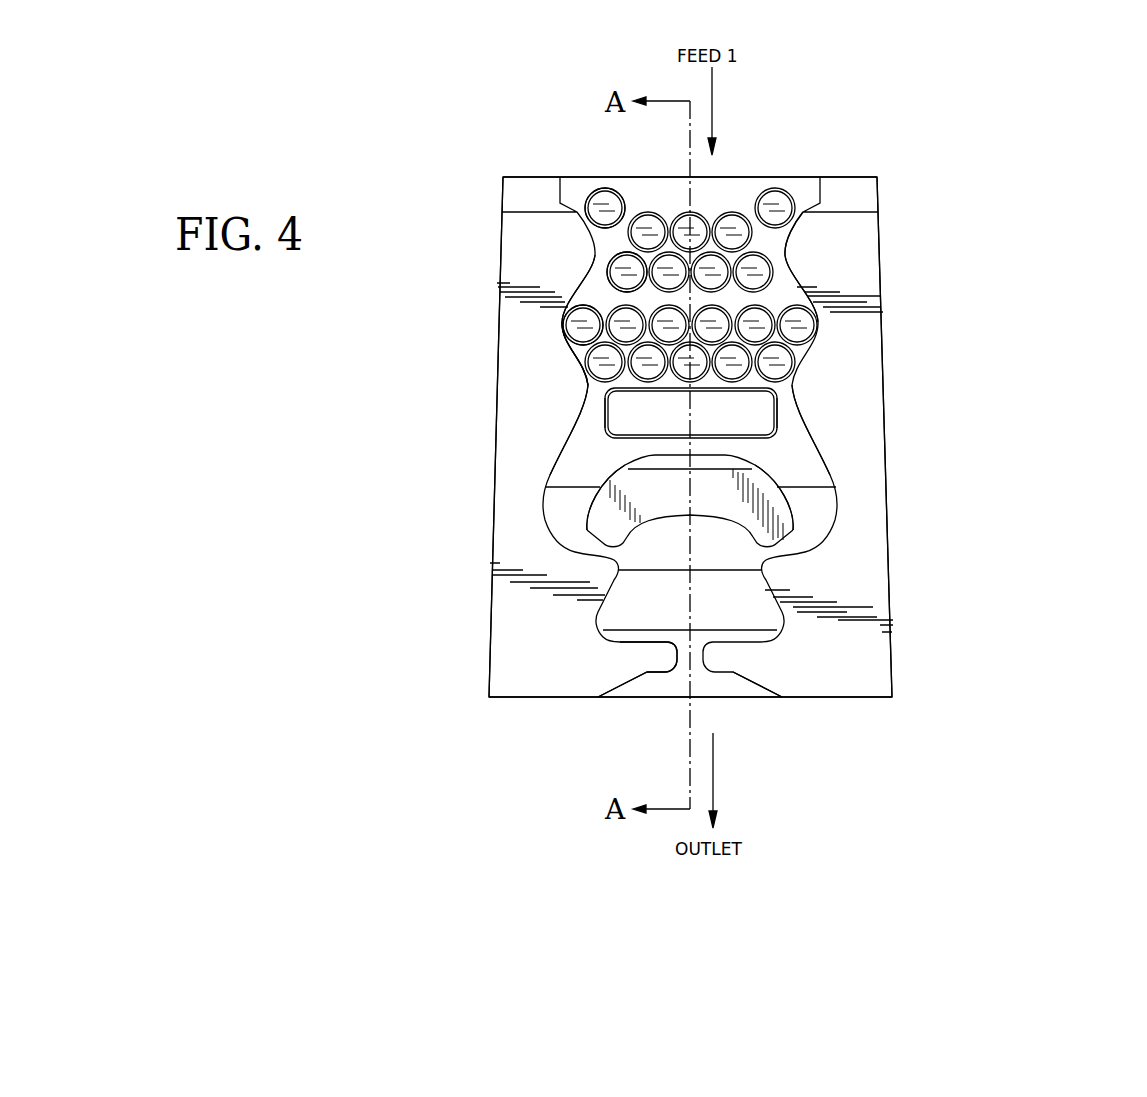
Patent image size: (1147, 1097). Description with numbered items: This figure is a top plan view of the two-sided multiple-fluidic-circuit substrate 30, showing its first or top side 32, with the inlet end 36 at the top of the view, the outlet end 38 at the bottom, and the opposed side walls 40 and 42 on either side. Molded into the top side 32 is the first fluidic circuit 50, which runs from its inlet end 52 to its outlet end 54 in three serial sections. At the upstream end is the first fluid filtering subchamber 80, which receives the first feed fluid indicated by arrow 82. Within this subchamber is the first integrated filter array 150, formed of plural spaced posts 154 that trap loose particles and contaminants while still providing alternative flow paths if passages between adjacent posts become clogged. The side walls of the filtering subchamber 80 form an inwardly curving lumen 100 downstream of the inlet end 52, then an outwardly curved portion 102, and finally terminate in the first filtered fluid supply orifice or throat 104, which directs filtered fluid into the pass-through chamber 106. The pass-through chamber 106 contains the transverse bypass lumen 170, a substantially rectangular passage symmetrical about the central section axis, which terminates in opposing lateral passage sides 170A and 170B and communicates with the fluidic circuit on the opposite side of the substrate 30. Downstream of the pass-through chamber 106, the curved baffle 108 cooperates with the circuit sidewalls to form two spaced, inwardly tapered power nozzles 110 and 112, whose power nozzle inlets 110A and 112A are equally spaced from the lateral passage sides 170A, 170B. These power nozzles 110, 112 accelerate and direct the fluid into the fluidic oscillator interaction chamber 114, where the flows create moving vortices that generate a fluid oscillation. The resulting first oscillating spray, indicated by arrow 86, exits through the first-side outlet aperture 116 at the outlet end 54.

The two-sided multiple-fluidic-circuit substrate 30 is at (948, 318).
The first or top side 32 is at (875, 360).
The inlet end 36 is at (802, 177).
The outlet end 38 is at (855, 697).
The side wall 40 is at (496, 298).
The side wall 42 is at (892, 488).
The first fluidic circuit 50 is at (545, 458).
The inlet end 52 is at (748, 187).
The outlet end 54 is at (748, 693).
The first fluid filtering subchamber 80 is at (777, 278).
The fluid (Feed 1) 82 is at (713, 96).
The first oscillating spray 86 is at (714, 777).
The inwardly curving lumen 100 is at (593, 196).
The outwardly curved portion 102 is at (562, 324).
The first filtered fluid supply orifice or throat 104 is at (590, 381).
The pass-through chamber 106 is at (793, 425).
The curved baffle 108 is at (777, 525).
The first power nozzle 110 is at (567, 523).
The power nozzle inlet 110A is at (587, 462).
The second power nozzle 112 is at (820, 520).
The power nozzle inlet 112A is at (800, 465).
The fluidic oscillator interaction chamber 114 is at (762, 607).
The first-side outlet aperture 116 is at (677, 660).
The first integrated filter array 150 is at (595, 288).
The posts 154 is at (598, 291).
The transverse bypass lumen 170 is at (728, 405).
The lateral passage side 170A is at (607, 412).
The lateral passage side 170B is at (776, 410).